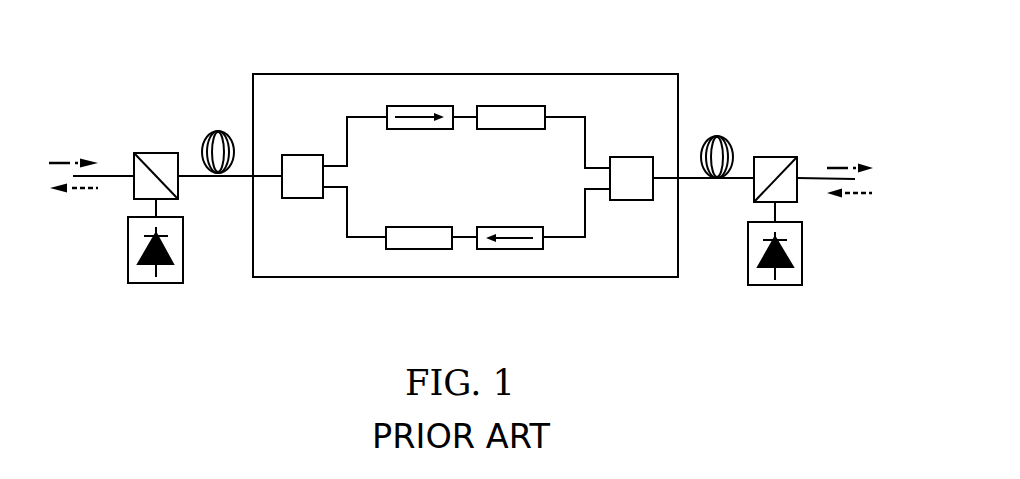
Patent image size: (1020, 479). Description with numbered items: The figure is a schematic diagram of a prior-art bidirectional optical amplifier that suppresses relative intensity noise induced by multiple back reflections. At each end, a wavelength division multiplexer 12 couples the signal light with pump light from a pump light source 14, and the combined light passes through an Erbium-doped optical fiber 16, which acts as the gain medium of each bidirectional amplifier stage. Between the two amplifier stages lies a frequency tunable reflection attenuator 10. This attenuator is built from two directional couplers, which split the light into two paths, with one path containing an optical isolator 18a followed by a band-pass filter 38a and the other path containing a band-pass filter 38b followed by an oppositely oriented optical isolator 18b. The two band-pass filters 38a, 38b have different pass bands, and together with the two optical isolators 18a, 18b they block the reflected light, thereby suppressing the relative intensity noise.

The frequency tunable reflection attenuator 10 is at (398, 73).
The wavelength division multiplexer 12 is at (157, 153).
The pump light source 14 is at (183, 272).
The Erbium-doped optical fiber 16 is at (220, 131).
The optical isolator 18a is at (420, 104).
The optical isolator 18b is at (505, 249).
The band-pass filter 38a is at (508, 106).
The band-pass filter 38b is at (413, 249).